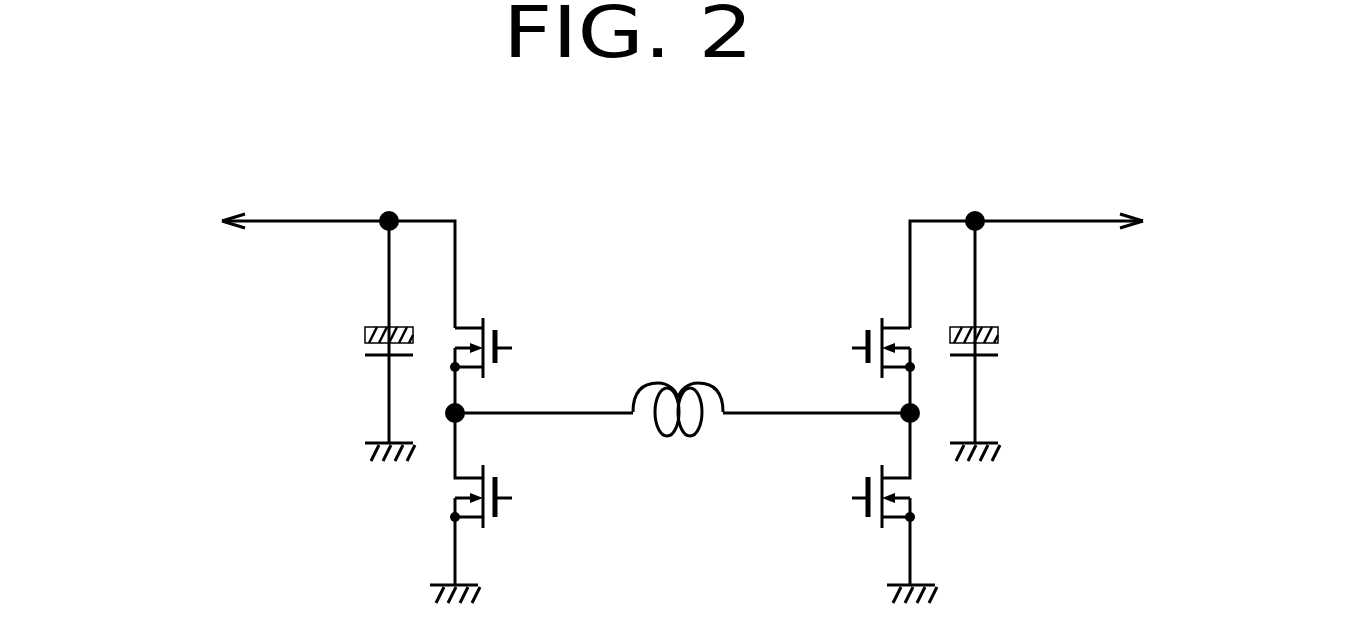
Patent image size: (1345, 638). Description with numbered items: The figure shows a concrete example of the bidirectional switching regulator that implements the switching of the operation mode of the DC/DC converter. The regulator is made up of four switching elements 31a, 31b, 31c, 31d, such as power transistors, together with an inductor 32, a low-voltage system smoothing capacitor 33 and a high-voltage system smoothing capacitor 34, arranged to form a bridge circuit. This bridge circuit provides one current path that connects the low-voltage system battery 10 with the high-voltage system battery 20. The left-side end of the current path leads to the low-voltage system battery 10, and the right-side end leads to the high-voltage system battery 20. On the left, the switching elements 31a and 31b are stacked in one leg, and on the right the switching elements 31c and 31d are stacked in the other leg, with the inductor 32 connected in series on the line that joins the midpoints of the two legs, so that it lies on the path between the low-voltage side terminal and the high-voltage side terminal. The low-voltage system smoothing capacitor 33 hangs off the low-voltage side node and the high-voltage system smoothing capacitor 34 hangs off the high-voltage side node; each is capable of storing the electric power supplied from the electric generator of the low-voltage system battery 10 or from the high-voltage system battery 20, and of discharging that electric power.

The low-voltage system battery 10 is at (251, 227).
The high-voltage system battery 20 is at (1121, 227).
The switching element 31a is at (496, 331).
The switching element 31b is at (496, 478).
The switching element 31c is at (868, 331).
The switching element 31d is at (868, 478).
The inductor 32 is at (694, 430).
The low-voltage system smoothing capacitor 33 is at (368, 326).
The high-voltage system smoothing capacitor 34 is at (997, 326).